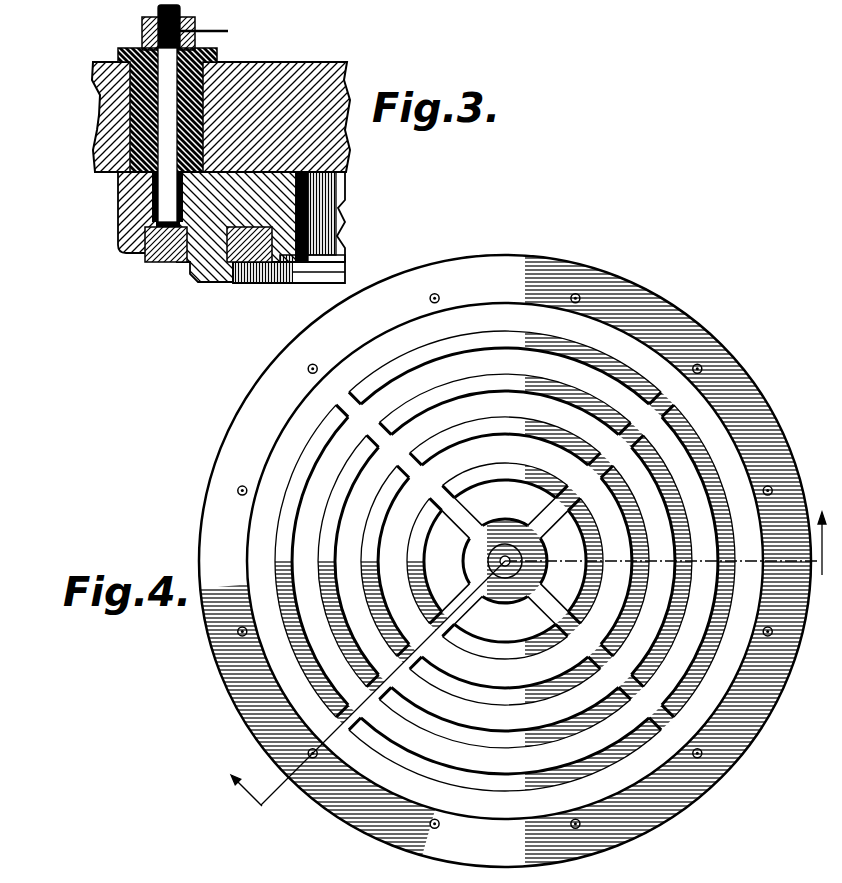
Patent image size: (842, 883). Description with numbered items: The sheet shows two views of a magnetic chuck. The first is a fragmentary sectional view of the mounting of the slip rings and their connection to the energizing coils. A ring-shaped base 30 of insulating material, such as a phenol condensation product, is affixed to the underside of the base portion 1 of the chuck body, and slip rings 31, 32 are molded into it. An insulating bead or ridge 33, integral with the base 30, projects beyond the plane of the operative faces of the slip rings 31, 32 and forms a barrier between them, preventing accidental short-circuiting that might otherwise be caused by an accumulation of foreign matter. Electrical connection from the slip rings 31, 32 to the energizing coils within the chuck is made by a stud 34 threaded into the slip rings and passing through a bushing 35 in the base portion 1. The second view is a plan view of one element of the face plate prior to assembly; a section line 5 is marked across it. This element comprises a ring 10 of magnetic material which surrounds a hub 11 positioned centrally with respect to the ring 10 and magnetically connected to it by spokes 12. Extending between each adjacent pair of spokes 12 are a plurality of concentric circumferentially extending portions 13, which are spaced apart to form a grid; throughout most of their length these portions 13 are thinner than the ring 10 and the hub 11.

In FIG. 3, the base portion 1 is at (314, 66).
In FIG. 4, the section line 5- 5 is at (529, 667).
In FIG. 4, the ring 10 is at (623, 292).
In FIG. 4, the hub 11 is at (488, 561).
In FIG. 4, the spokes 12 is at (412, 418).
In FIG. 4, the concentric circumferentially extending portions 13 is at (332, 531).
In FIG. 3, the ring-shaped base 30 is at (118, 224).
In FIG. 3, the slip ring 31 is at (262, 284).
In FIG. 3, the slip ring 32 is at (158, 265).
In FIG. 3, the insulating bead or ridge 33 is at (208, 285).
In FIG. 3, the stud 34 is at (118, 198).
In FIG. 3, the bushing 35 is at (160, 91).